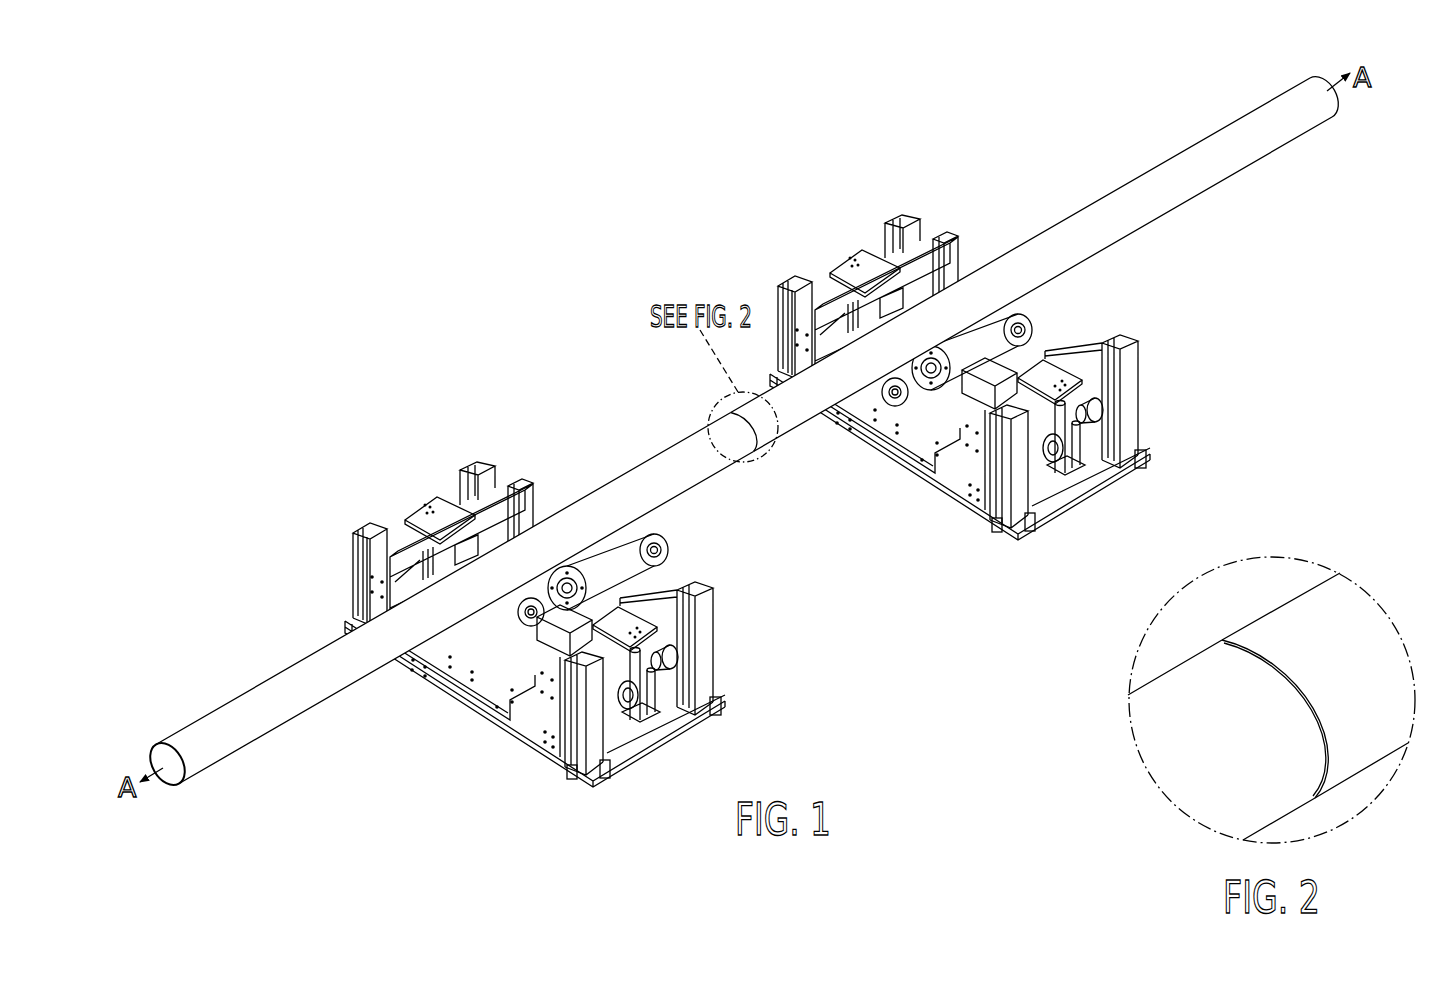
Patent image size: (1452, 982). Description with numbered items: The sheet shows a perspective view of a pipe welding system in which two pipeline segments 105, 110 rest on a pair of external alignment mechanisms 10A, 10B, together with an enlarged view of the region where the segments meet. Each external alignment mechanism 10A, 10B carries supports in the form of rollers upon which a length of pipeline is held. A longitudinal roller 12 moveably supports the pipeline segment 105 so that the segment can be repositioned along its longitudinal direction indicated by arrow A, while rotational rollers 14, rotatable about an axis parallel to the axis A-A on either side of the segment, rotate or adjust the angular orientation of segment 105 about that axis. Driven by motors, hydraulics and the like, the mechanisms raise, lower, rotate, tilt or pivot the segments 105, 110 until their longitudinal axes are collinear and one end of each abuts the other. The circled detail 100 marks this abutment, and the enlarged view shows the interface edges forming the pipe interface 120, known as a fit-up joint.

In FIG. 1, the external alignment mechanism 10A is at (1167, 391).
In FIG. 1, the external alignment mechanism 10B is at (466, 768).
In FIG. 1, the longitudinal roller 12 is at (1030, 313).
In FIG. 1, the rotational rollers 14 is at (960, 363).
In FIG. 1, the detail 100 is at (708, 396).
In FIG. 2, the detail 100 is at (1170, 582).
In FIG. 1, the pipeline segment 105 is at (1062, 213).
In FIG. 2, the pipeline segment 105 is at (1310, 589).
In FIG. 1, the pipeline segment 110 is at (228, 696).
In FIG. 2, the pipeline segment 110 is at (1141, 679).
In FIG. 2, the pipe interface 120 is at (1321, 712).